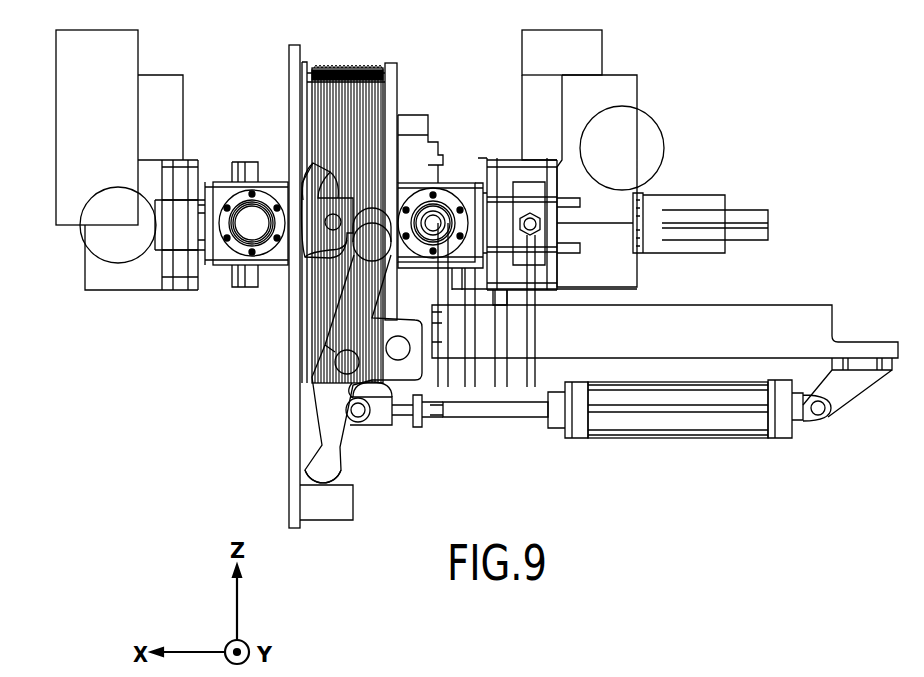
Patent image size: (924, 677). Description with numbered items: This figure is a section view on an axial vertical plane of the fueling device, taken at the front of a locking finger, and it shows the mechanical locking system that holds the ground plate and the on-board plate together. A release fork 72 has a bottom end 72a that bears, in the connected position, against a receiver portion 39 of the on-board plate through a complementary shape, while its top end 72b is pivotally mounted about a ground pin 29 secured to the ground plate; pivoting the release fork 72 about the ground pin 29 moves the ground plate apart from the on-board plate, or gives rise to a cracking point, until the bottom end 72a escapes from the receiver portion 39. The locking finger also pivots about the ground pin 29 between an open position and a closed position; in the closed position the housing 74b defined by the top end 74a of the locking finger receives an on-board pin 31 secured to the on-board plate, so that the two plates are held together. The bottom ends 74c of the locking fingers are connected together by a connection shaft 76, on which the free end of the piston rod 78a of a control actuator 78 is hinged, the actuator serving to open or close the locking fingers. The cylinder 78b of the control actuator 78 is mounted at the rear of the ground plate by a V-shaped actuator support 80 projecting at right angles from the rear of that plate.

The ground pin 29 is at (436, 222).
The on-board pin 31 is at (352, 192).
The receiver portion 39 is at (334, 517).
The release fork 72 is at (352, 280).
The bottom end of the release fork 72a is at (333, 474).
The top end of the release fork 72b is at (373, 240).
The top end of the locking finger 74a is at (308, 250).
The housing 74b is at (330, 218).
The bottom end of the locking finger 74c is at (368, 388).
The connection shaft 76 is at (358, 412).
The control actuator 78 is at (630, 442).
The piston rod 78a is at (497, 412).
The cylinder 78b is at (782, 422).
The actuator support 80 is at (805, 316).